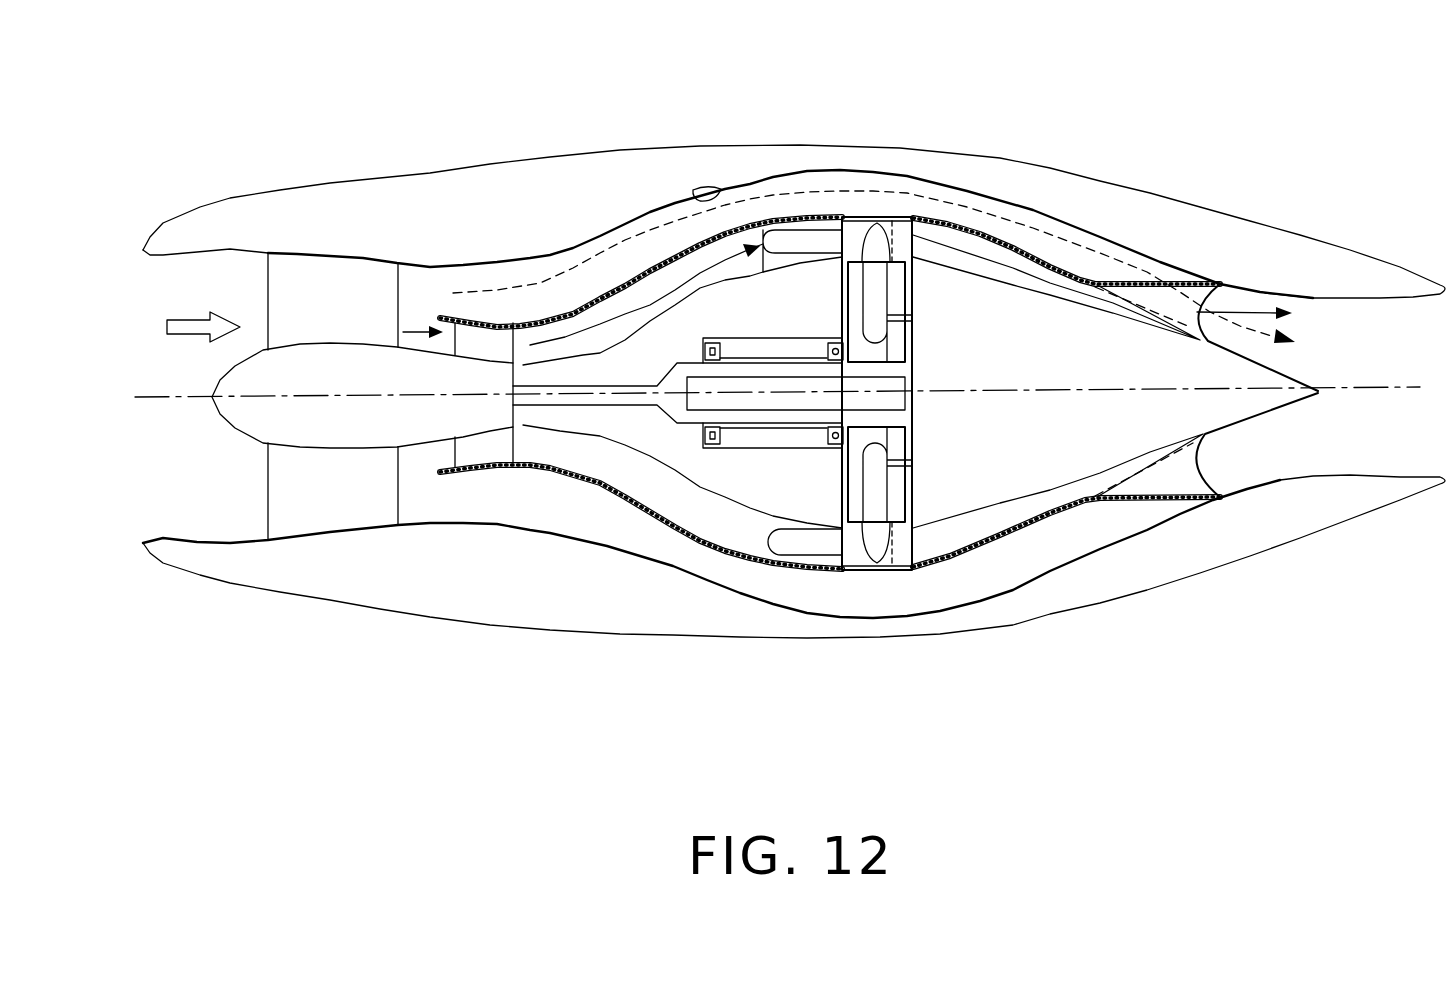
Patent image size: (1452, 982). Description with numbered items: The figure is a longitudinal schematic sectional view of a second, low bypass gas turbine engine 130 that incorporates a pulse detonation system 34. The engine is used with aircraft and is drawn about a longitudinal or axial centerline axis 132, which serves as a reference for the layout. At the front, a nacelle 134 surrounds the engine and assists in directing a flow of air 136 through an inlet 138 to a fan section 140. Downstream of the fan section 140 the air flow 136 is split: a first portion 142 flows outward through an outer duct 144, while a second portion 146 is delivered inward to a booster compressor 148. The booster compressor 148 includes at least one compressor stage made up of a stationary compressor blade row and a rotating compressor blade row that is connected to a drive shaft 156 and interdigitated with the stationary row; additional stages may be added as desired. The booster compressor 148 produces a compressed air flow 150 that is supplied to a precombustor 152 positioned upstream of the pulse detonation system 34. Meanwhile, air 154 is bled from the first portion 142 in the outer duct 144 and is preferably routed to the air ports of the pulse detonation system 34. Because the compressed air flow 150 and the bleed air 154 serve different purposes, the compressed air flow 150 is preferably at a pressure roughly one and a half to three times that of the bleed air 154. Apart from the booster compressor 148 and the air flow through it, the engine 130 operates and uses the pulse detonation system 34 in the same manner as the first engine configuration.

The gas turbine engine 130 is at (1252, 103).
The longitudinal or axial centerline axis 132 is at (1348, 388).
The nacelle 134 is at (398, 185).
The flow of air 136 is at (194, 313).
The inlet 138 is at (227, 253).
The fan section 140 is at (258, 478).
The first portion of air flow 142 is at (548, 283).
The outer duct 144 is at (720, 197).
The second portion of air flow 146 is at (413, 330).
The booster compressor 148 is at (438, 460).
The compressed air flow 150 is at (583, 338).
The precombustor 152 is at (810, 263).
The bleed air 154 is at (880, 202).
The pulse detonation system 34 is at (928, 298).
The drive shaft 156 is at (615, 403).